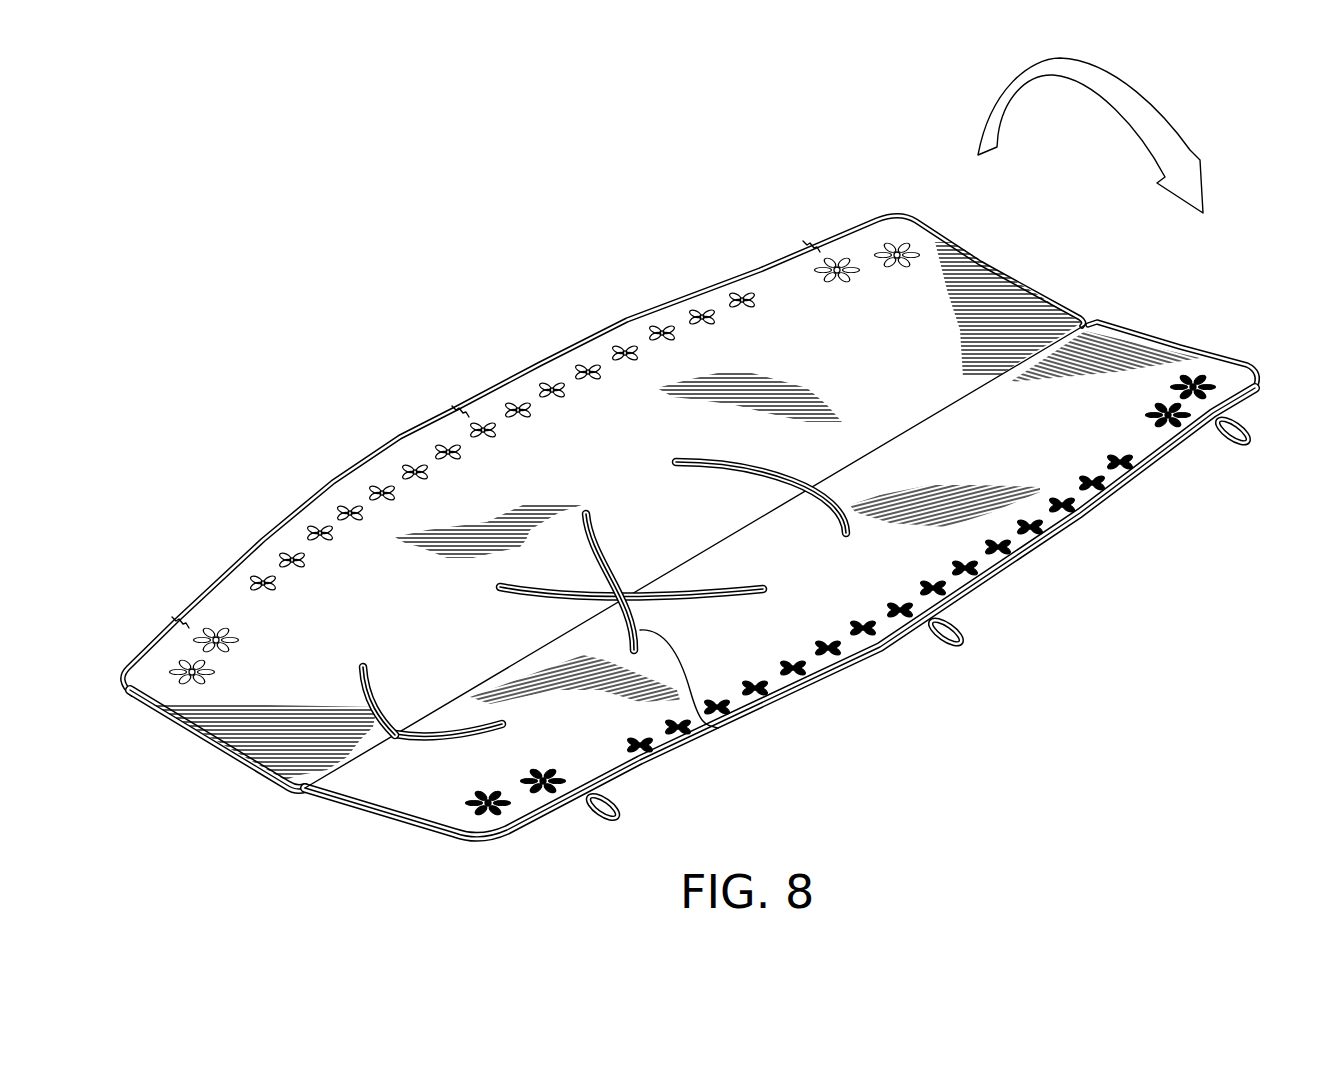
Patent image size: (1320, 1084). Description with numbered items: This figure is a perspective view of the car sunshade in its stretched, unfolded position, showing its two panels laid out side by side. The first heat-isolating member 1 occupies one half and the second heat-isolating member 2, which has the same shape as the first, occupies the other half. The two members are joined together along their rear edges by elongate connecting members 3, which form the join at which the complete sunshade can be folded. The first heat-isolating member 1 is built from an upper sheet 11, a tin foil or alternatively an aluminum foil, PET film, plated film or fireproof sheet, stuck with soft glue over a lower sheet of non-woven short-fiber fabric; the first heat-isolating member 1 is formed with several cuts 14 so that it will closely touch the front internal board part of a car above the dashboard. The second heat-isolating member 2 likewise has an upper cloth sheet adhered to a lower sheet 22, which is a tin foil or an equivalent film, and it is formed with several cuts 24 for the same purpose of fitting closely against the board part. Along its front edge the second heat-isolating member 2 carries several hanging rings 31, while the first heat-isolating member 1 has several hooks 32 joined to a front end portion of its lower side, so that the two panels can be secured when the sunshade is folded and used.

The first heat-isolating member 1 is at (138, 693).
The second heat-isolating member 2 is at (400, 823).
The elongate connecting members 3 is at (306, 793).
The upper sheet 11 is at (782, 270).
The cuts 14 is at (683, 458).
The lower sheet 22 is at (793, 652).
The cuts 24 is at (718, 728).
The hanging rings 31 is at (620, 806).
The hooks 32 is at (813, 240).